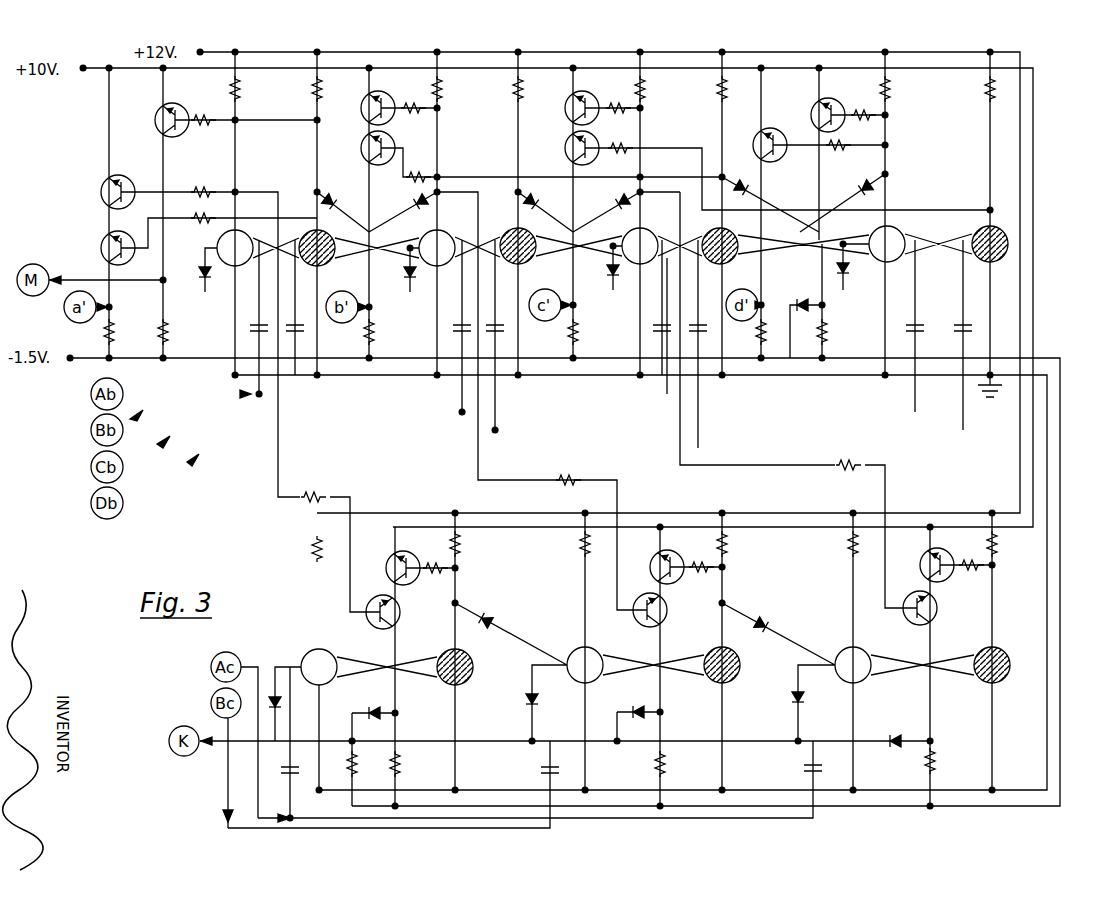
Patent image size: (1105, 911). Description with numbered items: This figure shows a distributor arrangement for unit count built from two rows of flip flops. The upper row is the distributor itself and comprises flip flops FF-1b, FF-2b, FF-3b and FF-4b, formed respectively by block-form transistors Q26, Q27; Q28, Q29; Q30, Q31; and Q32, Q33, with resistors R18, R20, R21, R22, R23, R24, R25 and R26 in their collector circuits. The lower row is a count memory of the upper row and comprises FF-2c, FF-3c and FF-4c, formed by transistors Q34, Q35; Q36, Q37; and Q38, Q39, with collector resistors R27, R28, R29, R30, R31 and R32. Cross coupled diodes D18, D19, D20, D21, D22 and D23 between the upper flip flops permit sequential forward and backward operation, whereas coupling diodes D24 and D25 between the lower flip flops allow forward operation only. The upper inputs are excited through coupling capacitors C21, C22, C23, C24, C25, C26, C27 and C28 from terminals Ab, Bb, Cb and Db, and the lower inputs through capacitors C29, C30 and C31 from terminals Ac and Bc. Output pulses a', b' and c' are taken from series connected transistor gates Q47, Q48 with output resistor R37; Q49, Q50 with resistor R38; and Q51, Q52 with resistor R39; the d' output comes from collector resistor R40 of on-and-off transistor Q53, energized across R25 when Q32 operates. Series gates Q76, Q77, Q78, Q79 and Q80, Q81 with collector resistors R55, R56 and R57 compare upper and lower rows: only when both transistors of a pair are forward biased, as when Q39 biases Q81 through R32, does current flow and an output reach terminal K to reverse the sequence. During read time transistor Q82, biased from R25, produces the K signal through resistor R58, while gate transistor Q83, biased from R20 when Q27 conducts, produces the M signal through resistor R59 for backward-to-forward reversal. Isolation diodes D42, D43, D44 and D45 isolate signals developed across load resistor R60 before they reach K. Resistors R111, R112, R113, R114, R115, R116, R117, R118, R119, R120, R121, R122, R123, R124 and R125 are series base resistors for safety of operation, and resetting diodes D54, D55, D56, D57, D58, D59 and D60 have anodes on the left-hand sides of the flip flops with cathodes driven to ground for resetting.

The collector circuit resistor R18 is at (251, 92).
The collector circuit resistor R20 is at (301, 89).
The collector circuit resistor R21 is at (453, 89).
The collector circuit resistor R22 is at (502, 90).
The collector circuit resistor R23 is at (657, 86).
The collector circuit resistor R24 is at (704, 90).
The collector circuit resistor R25 is at (902, 89).
The collector circuit resistor R26 is at (970, 91).
The collector circuit resistor R27 is at (300, 550).
The collector circuit resistor R28 is at (471, 544).
The collector circuit resistor R29 is at (568, 544).
The collector circuit resistor R30 is at (739, 544).
The collector circuit resistor R31 is at (834, 547).
The collector circuit resistor R32 is at (1008, 544).
The output resistor R37 is at (126, 332).
The output resistor R38 is at (386, 332).
The output resistor R39 is at (590, 332).
The collector circuit resistor R40 is at (752, 335).
The collector circuit resistor R55 is at (412, 764).
The collector circuit resistor R56 is at (677, 764).
The collector circuit resistor R57 is at (947, 761).
The collector circuit resistor R58 is at (839, 332).
The collector circuit resistor R59 is at (180, 332).
The load resistor R60 is at (339, 764).
The base series resistor R111 is at (197, 183).
The base series resistor R112 is at (194, 210).
The base series resistor R113 is at (211, 128).
The base series resistor R114 is at (417, 117).
The base series resistor R115 is at (426, 165).
The base series resistor R116 is at (617, 118).
The base series resistor R117 is at (621, 157).
The base series resistor R118 is at (851, 154).
The base series resistor R119 is at (867, 123).
The base series resistor R120 is at (319, 489).
The base series resistor R121 is at (431, 556).
The base series resistor R122 is at (567, 489).
The base series resistor R123 is at (705, 578).
The base series resistor R124 is at (855, 477).
The base series resistor R125 is at (967, 574).
The transistor Q26 is at (218, 248).
The transistor Q27 is at (328, 255).
The transistor Q28 is at (421, 244).
The transistor Q29 is at (507, 240).
The transistor Q30 is at (627, 240).
The transistor Q31 is at (728, 254).
The transistor Q32 is at (867, 239).
The transistor Q33 is at (970, 239).
The transistor Q34 is at (306, 664).
The transistor Q35 is at (472, 667).
The transistor Q36 is at (570, 657).
The transistor Q37 is at (739, 665).
The transistor Q38 is at (838, 662).
The transistor Q39 is at (1002, 658).
The gate transistor Q47 is at (99, 192).
The gate transistor Q48 is at (100, 248).
The gate transistor Q49 is at (360, 108).
The gate transistor Q50 is at (360, 148).
The gate transistor Q51 is at (563, 108).
The gate transistor Q52 is at (566, 148).
The on-and-off transistor Q53 is at (771, 133).
The gate transistor Q76 is at (400, 614).
The series connected transistor Q77 is at (415, 574).
The gate transistor Q78 is at (668, 610).
The series connected transistor Q79 is at (652, 566).
The gate transistor Q80 is at (937, 608).
The series connected transistor Q81 is at (921, 564).
The transistor Q82 is at (810, 102).
The gate transistor Q83 is at (154, 120).
The cross coupled diode D18 is at (335, 192).
The cross coupled diode D19 is at (541, 214).
The cross coupled diode D20 is at (738, 197).
The cross coupled diode D21 is at (846, 182).
The cross coupled diode D22 is at (606, 201).
The cross coupled diode D23 is at (404, 201).
The coupling diode D24 is at (506, 621).
The coupling diode D25 is at (752, 610).
The isolation diode D42 is at (372, 702).
The isolation diode D43 is at (633, 702).
The isolation diode D44 is at (887, 752).
The isolation diode D45 is at (792, 294).
The resetting diode D54 is at (192, 283).
The resetting diode D55 is at (399, 283).
The resetting diode D56 is at (598, 283).
The resetting diode D57 is at (858, 282).
The resetting diode D58 is at (275, 712).
The resetting diode D59 is at (519, 710).
The resetting diode D60 is at (786, 708).
The coupling capacitor C21 is at (253, 338).
The coupling capacitor C22 is at (292, 338).
The coupling capacitor C23 is at (456, 338).
The coupling capacitor C24 is at (506, 339).
The coupling capacitor C25 is at (658, 338).
The coupling capacitor C26 is at (709, 339).
The coupling capacitor C27 is at (907, 339).
The coupling capacitor C28 is at (974, 339).
The coupling capacitor C29 is at (279, 776).
The coupling capacitor C30 is at (531, 772).
The coupling capacitor C31 is at (795, 771).
The flip flop FF-1b is at (270, 482).
The flip flop FF-2b is at (476, 482).
The flip flop FF-3b is at (683, 482).
The flip flop FF-4b is at (966, 482).
The flip flop FF-2c is at (448, 731).
The flip flop FF-3c is at (716, 730).
The flip flop FF-4c is at (988, 726).